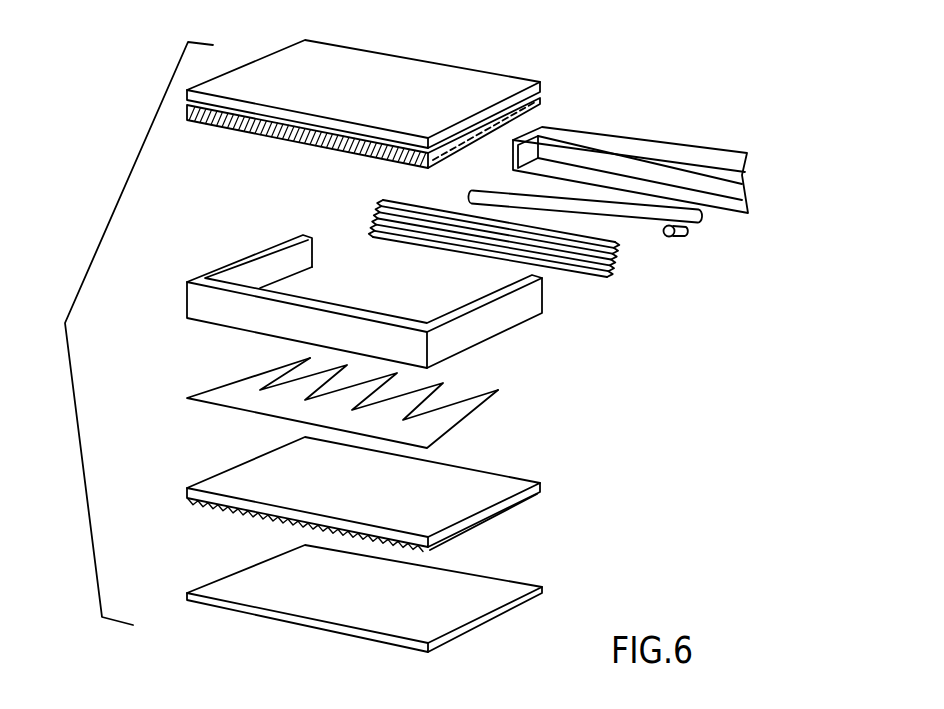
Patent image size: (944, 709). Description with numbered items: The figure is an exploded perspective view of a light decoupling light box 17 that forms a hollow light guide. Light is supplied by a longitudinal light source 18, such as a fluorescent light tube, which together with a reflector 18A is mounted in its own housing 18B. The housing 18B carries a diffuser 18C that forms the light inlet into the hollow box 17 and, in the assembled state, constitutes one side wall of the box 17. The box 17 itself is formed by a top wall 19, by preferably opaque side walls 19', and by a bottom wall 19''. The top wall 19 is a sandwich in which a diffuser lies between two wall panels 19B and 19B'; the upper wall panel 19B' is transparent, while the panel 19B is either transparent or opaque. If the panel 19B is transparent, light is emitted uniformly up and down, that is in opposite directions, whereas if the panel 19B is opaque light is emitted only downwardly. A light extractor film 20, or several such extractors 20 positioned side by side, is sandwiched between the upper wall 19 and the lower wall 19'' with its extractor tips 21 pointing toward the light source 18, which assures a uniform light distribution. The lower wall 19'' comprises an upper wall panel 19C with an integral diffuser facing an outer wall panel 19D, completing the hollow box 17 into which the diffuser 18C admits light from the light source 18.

The light decoupling light box 17 is at (100, 116).
The longitudinal light source 18 is at (648, 227).
The reflector 18A is at (700, 220).
The housing 18B is at (715, 160).
The diffuser 18C is at (618, 272).
The top wall 19 is at (399, 108).
The wall panel 19B is at (363, 81).
The upper wall panel 19B' is at (423, 150).
The side walls 19' is at (369, 304).
The bottom wall 19'' is at (398, 555).
The upper wall panel 19C is at (238, 485).
The outer wall panel 19D is at (267, 613).
The light extractor film 20 is at (213, 393).
The extractor tips 21 is at (470, 410).